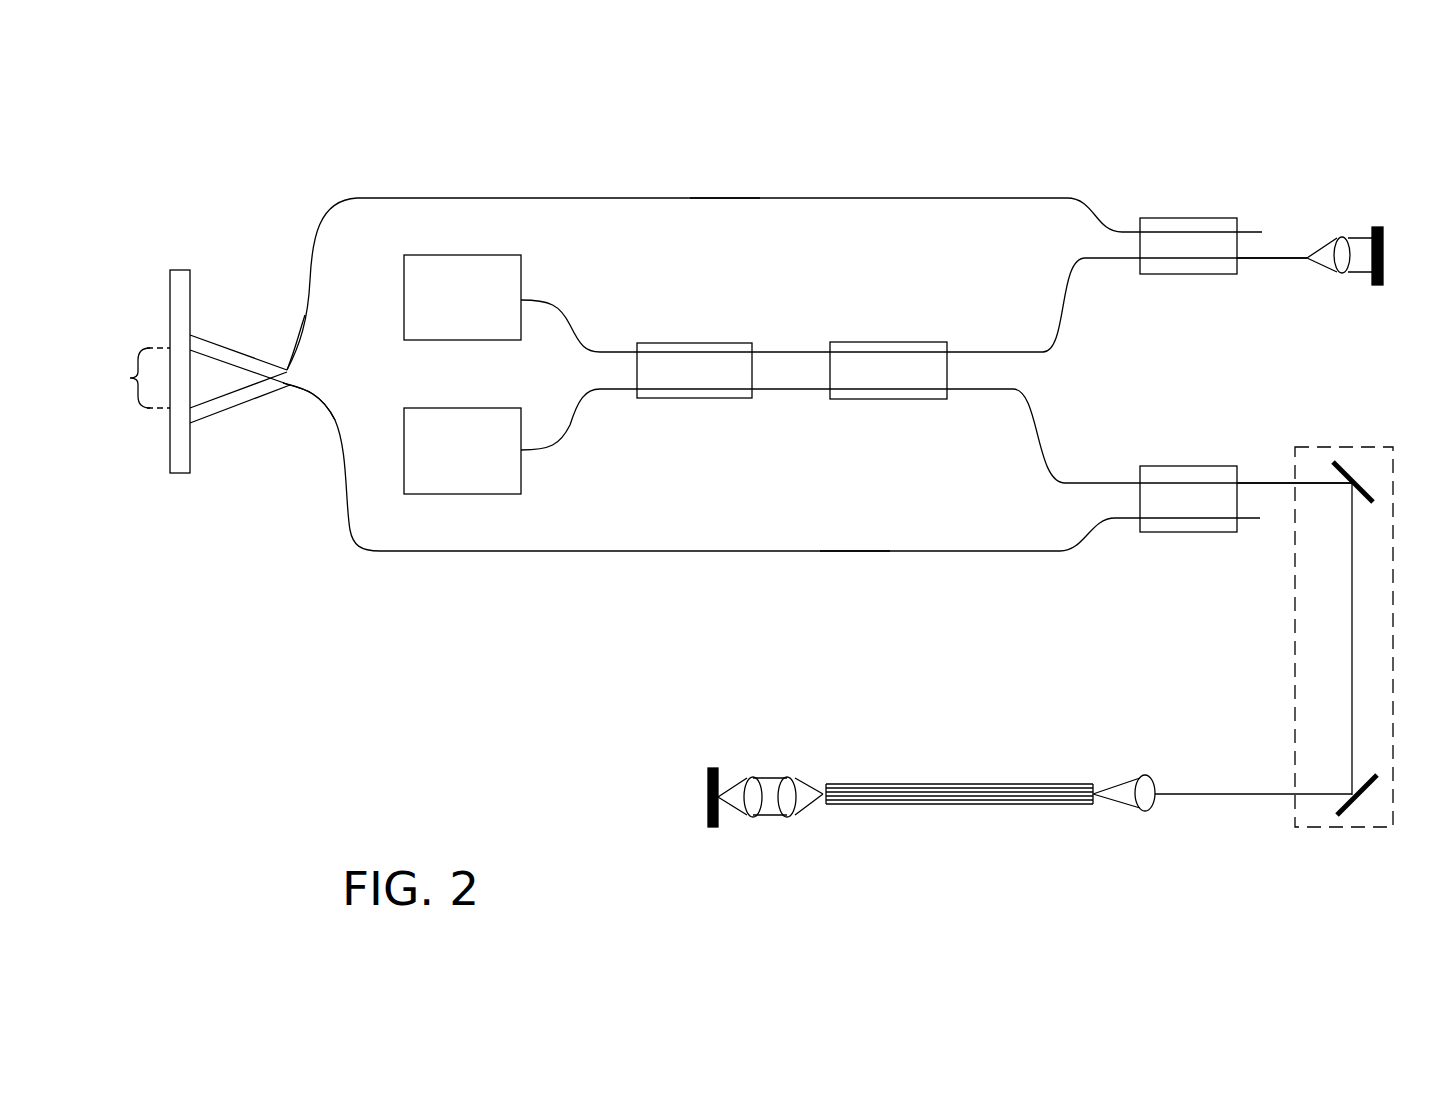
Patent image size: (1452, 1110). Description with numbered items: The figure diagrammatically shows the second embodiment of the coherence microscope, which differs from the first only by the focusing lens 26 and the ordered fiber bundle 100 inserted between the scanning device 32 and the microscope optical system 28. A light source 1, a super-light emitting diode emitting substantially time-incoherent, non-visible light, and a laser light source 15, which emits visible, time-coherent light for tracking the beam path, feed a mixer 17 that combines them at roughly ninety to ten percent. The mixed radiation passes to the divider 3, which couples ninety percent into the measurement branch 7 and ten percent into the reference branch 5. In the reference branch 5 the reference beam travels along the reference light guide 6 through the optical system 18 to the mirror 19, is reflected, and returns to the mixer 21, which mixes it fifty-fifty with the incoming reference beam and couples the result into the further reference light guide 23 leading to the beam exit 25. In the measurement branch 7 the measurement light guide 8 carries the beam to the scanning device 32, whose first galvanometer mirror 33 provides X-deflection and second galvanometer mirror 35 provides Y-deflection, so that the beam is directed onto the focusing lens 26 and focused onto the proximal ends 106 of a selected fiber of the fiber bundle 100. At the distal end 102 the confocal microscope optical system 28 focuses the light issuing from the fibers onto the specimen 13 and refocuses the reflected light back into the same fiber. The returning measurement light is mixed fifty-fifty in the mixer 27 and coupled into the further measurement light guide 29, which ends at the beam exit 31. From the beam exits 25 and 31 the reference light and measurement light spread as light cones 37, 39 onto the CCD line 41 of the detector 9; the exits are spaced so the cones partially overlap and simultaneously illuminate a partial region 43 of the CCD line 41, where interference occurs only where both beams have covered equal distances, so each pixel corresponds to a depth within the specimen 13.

The light source 1 is at (462, 253).
The divider 3 is at (888, 399).
The reference branch 5 is at (719, 180).
The reference light guide 6 is at (1280, 257).
The measurement branch 7 is at (846, 568).
The measurement light guide 8 is at (1260, 483).
The detector 9 is at (202, 255).
The specimen 13 is at (708, 813).
The laser light source 15 is at (462, 495).
The mixer 17 is at (695, 398).
The optical system 18 is at (1342, 220).
The mirror 19 is at (1375, 227).
The mixer 21 is at (1227, 218).
The further reference light guide 23 is at (573, 198).
The beam exit 25 is at (288, 365).
The focusing lens 26 is at (1155, 830).
The mixer 27 is at (1192, 532).
The microscope optical system 28 is at (780, 760).
The further measurement light guide 29 is at (602, 551).
The beam exit 31 is at (300, 393).
The scanning device 32 is at (1393, 517).
The first galvanometer mirror 33 is at (1363, 483).
The second galvanometer mirror 35 is at (1370, 790).
The light cone 37 is at (213, 343).
The light cone 39 is at (224, 410).
The CCD line 41 is at (170, 430).
The partial region 43 is at (132, 378).
The ordered fiber bundle 100 is at (933, 804).
The distal end 102 is at (822, 807).
The proximal ends 106 is at (1097, 800).